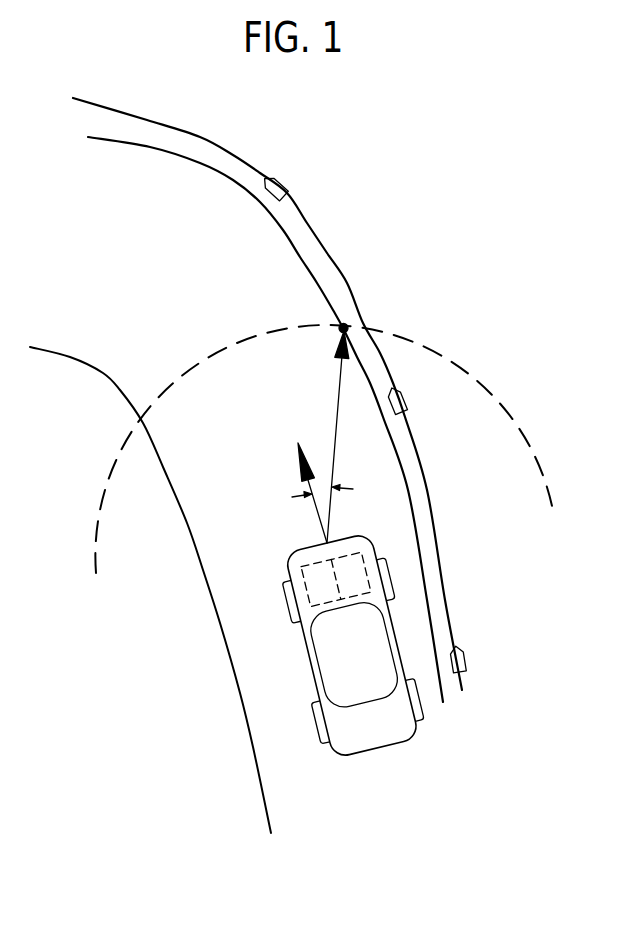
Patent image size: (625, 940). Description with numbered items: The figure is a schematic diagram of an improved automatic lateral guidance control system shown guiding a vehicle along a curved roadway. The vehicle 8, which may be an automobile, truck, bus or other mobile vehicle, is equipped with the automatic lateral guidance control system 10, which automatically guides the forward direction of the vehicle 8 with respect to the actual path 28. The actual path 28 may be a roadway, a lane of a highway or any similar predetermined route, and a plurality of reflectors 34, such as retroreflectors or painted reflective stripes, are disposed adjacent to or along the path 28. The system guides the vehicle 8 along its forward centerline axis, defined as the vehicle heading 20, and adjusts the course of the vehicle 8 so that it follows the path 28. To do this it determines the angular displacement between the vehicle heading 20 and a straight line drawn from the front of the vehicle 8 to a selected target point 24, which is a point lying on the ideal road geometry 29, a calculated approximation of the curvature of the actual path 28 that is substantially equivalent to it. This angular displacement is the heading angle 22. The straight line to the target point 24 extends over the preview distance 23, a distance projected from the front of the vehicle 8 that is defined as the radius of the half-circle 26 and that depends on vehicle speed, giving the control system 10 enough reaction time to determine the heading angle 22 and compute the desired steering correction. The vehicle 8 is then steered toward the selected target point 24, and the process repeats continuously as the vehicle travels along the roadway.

The vehicle 8 is at (372, 758).
The automatic lateral guidance control system 10 is at (302, 570).
The vehicle heading 20 is at (313, 497).
The heading angle 22 is at (318, 463).
The preview distance 23 is at (338, 394).
The target point 24 is at (347, 325).
The half-circle 26 is at (489, 382).
The actual path 28 is at (450, 605).
The ideal road geometry 29 is at (292, 400).
The reflectors 34 is at (286, 182).